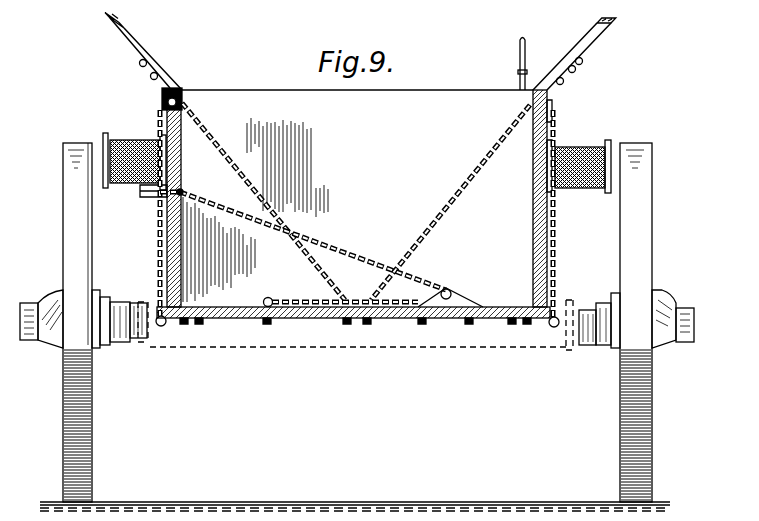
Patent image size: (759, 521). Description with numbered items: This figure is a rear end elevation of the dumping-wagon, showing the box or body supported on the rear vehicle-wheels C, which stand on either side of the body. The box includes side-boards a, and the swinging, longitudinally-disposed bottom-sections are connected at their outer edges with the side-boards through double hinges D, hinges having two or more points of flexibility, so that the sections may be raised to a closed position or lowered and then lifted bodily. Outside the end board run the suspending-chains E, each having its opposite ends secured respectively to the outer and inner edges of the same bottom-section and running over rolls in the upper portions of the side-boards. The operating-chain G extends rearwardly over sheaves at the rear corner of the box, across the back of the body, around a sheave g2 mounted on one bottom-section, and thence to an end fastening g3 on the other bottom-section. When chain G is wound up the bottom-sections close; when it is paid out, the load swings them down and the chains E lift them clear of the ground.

The side-board a is at (182, 168).
The rear vehicle-wheel C is at (83, 408).
The double hinge D is at (546, 298).
The suspending-chain E is at (262, 193).
The operating-chain G is at (331, 240).
The sheave g2 is at (451, 288).
The end fastening g3 is at (281, 310).